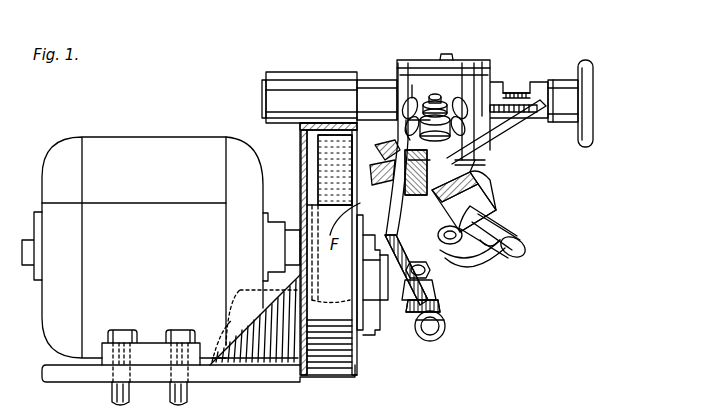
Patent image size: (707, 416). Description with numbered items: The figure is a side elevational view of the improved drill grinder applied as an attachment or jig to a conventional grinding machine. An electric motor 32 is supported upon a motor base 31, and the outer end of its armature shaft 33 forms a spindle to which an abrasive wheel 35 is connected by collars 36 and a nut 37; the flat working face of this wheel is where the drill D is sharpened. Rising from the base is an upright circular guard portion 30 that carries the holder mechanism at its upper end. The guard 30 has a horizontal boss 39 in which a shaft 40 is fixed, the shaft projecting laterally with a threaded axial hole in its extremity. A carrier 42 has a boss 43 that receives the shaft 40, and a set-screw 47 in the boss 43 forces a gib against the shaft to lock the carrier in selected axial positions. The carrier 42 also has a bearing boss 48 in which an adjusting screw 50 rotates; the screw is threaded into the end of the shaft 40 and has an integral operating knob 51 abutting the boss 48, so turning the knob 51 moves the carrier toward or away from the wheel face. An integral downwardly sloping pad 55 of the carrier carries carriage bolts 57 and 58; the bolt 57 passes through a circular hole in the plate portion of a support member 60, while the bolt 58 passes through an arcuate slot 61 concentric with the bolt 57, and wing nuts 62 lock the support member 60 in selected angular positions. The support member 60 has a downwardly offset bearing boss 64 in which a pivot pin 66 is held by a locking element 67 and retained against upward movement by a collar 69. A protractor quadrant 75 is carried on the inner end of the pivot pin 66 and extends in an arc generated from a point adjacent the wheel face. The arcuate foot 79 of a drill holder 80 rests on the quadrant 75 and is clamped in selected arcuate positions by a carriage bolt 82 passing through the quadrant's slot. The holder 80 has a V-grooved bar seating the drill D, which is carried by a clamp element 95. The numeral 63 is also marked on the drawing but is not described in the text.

The upright circular guard portion 30 is at (302, 162).
The motor base 31 is at (250, 383).
The electric motor 32 is at (108, 146).
The armature shaft 33 is at (380, 270).
The abrasive wheel 35 is at (330, 171).
The collars 36 is at (300, 200).
The nut 37 is at (378, 285).
The horizontal boss 39 is at (286, 72).
The shaft 40 is at (358, 80).
The carrier 42 is at (494, 62).
The boss 43 is at (484, 62).
The set-screw 47 is at (446, 54).
The bearing boss 48 is at (555, 82).
The adjusting screw 50 is at (512, 86).
The operating knob 51 is at (594, 104).
The downwardly sloping pad 55 is at (488, 128).
The carriage bolt 57 is at (434, 94).
The carriage bolt 58 is at (464, 150).
The support member 60 is at (460, 157).
The arcuate slot 61 is at (406, 132).
The wing nuts 62 is at (412, 85).
The bar 63 is at (470, 152).
The bearing boss 64 is at (436, 300).
The pivot pin 66 is at (434, 342).
The locking element 67 is at (418, 318).
The collar 69 is at (452, 328).
The protractor quadrant 75 is at (465, 262).
The arcuate foot 79 is at (475, 245).
The drill holder 80 is at (480, 212).
The carriage bolt 82 is at (453, 245).
The clamp element 95 is at (484, 188).
The drill D is at (515, 232).